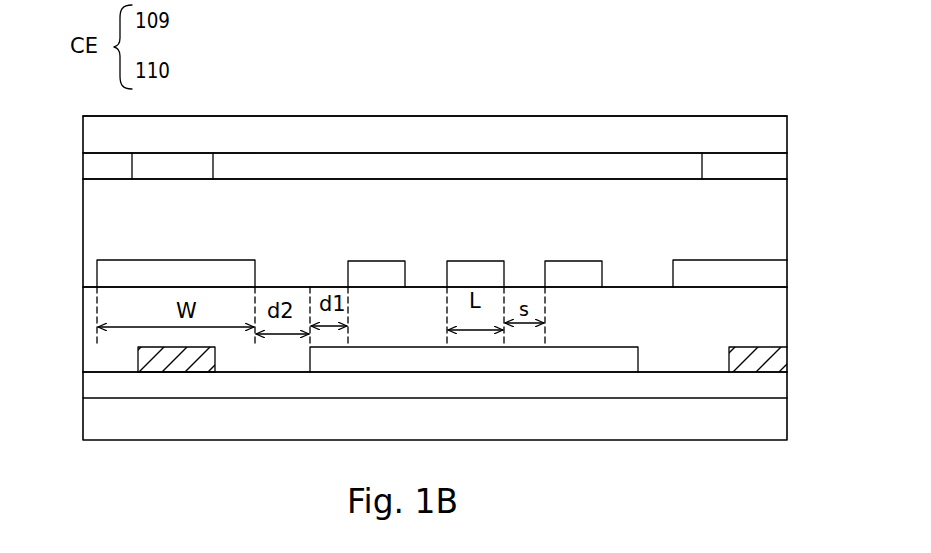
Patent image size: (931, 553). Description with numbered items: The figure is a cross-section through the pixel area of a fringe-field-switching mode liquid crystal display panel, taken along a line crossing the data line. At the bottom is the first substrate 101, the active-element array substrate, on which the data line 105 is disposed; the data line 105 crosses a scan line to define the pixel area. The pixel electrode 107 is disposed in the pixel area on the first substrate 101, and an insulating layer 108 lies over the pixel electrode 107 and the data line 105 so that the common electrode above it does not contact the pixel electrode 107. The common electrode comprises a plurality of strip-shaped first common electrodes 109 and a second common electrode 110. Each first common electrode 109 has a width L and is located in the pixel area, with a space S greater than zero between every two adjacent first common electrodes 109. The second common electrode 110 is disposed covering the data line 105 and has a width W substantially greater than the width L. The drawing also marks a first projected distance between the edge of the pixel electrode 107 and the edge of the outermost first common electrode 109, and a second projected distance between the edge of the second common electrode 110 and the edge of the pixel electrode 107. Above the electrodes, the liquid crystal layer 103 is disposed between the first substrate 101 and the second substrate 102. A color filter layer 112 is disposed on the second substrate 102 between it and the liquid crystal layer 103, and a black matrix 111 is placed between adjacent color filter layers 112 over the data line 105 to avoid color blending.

The first substrate 101 is at (771, 424).
The second substrate 102 is at (550, 147).
The liquid crystal layer 103 is at (771, 224).
The data line 105 is at (150, 365).
The pixel electrode 107 is at (618, 352).
The insulating layer 108 is at (771, 330).
The first common electrodes 109 is at (573, 275).
The second common electrode 110 is at (98, 283).
The black matrix 111 is at (148, 170).
The color filter layer 112 is at (370, 170).